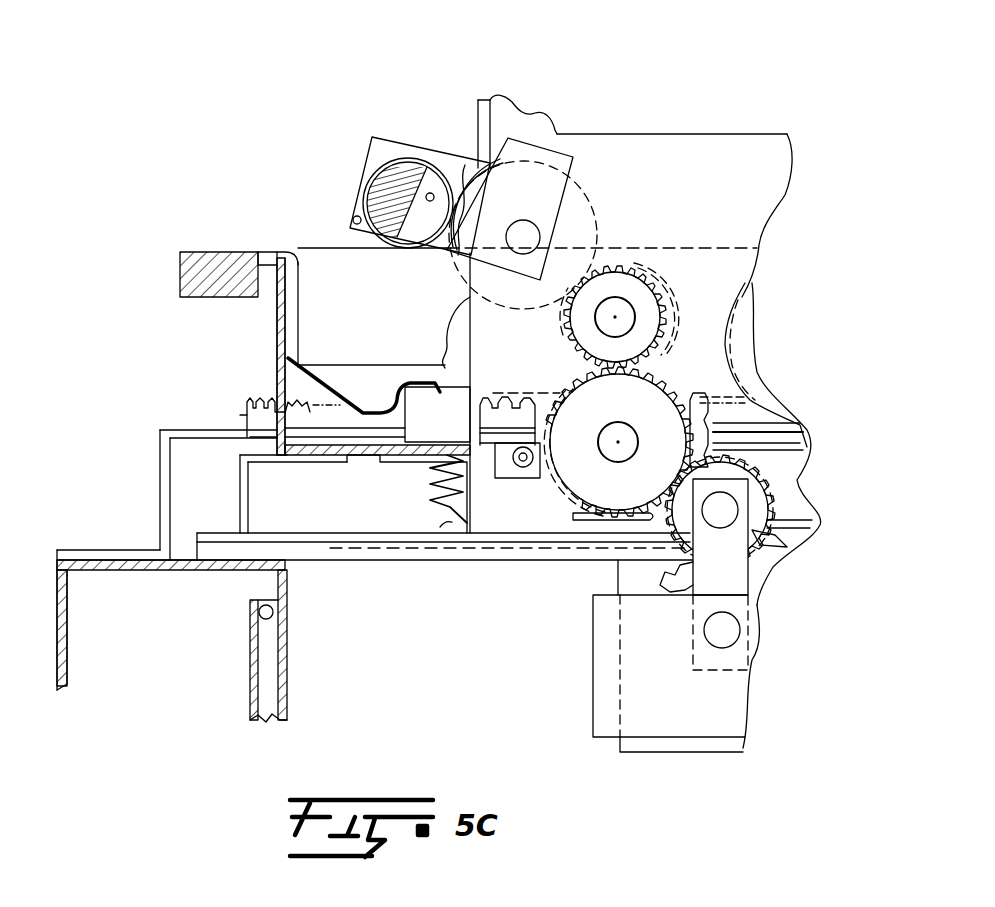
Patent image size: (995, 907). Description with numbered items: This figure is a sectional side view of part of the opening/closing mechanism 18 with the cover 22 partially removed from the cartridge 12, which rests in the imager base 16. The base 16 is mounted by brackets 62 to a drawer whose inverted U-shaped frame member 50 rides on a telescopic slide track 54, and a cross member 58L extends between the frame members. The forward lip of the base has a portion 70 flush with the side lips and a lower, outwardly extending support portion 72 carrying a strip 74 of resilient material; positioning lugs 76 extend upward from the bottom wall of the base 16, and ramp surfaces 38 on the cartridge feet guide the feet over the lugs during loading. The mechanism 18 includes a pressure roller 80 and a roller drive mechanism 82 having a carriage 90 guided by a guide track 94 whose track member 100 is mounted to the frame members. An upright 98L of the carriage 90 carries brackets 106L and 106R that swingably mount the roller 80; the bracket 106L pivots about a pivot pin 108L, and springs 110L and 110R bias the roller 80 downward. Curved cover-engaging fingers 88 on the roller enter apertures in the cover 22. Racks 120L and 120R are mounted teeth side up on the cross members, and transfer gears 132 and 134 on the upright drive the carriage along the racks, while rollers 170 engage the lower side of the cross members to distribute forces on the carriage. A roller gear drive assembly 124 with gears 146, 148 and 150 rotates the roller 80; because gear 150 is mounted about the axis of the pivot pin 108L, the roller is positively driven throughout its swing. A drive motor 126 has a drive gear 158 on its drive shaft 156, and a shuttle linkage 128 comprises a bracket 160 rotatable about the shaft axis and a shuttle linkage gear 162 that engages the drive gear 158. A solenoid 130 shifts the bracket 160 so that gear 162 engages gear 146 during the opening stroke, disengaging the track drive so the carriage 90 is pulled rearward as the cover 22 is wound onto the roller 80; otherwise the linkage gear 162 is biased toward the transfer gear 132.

The opening/closing mechanism 18 is at (345, 72).
The cartridge 12 is at (193, 238).
The portion of forward lip 70 is at (272, 262).
The strip of resilient material 74 is at (180, 270).
The outwardly extending support portion 72 is at (205, 300).
The ramp surfaces 38 is at (288, 384).
The rack 120R is at (247, 415).
The spring 110R is at (330, 247).
The cartridge cover 22 is at (405, 152).
The pressure roller 80 is at (362, 200).
The cover-engaging fingers 88 is at (440, 160).
The roller drive mechanism 82 is at (542, 128).
The bracket 106R is at (372, 140).
The bracket 106L is at (545, 148).
The carriage 90 is at (705, 128).
The upright 98L is at (746, 146).
The pivot pin 108L is at (580, 222).
The gear 150 is at (586, 232).
The roller gear drive assembly 124 is at (708, 228).
The gear 148 is at (657, 308).
The gear 146 is at (648, 387).
The transfer gear 134 is at (772, 300).
The rack 120L is at (520, 395).
The transfer gear 132 is at (810, 455).
The positioning lugs 76 is at (455, 436).
The cross member 58L is at (160, 497).
The brackets 62 is at (240, 500).
The base 16 is at (340, 464).
The spring 110L is at (433, 487).
The rollers 170 is at (537, 480).
The shuttle linkage gear 162 is at (760, 532).
The bracket 160 is at (740, 584).
The drive shaft 156 is at (741, 636).
The drive gear 158 is at (660, 580).
The shuttle linkage 128 is at (698, 584).
The drive motor 126 is at (712, 748).
The track member 100 is at (418, 572).
The guide track 94 is at (340, 572).
The solenoid 130 is at (512, 473).
The frame member 50 is at (68, 640).
The telescopic slide track 54 is at (250, 672).